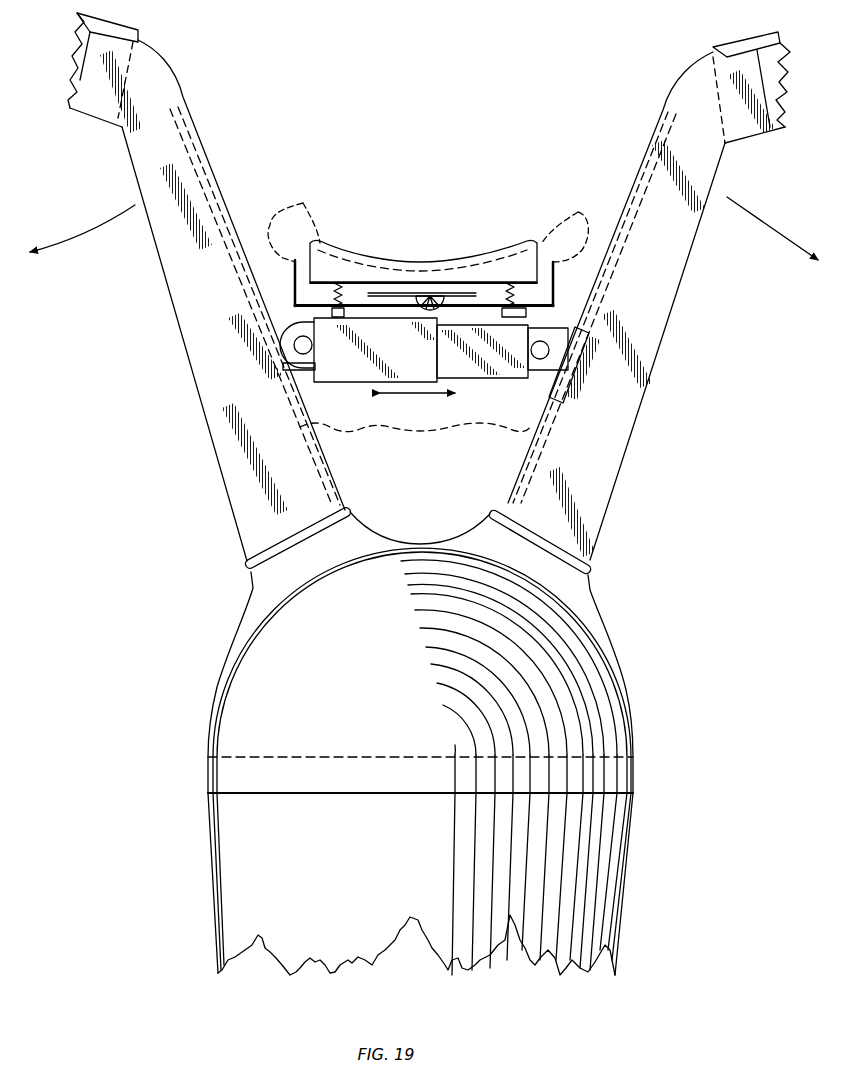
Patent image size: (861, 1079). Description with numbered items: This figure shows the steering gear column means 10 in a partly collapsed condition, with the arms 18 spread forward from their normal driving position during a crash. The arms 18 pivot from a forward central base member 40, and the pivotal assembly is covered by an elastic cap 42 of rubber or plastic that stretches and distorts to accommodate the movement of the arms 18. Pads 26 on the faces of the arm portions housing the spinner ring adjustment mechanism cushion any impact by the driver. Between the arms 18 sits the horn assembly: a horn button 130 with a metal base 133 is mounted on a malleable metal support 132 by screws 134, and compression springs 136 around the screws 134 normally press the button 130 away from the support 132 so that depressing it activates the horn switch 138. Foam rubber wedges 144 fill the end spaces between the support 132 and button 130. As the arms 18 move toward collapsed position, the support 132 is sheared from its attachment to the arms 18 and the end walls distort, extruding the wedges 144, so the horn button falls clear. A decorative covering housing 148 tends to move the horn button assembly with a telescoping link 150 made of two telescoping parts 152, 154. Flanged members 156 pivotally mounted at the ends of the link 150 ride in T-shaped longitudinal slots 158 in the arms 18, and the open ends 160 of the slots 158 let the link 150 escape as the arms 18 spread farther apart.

The steering gear column means 10 is at (620, 156).
The arms 18 is at (200, 301).
The pads 26 is at (112, 27).
The base member 40 is at (388, 840).
The elastic cap 42 is at (420, 690).
The horn button 130 is at (414, 262).
The malleable metal support 132 is at (360, 305).
The metal base 133 is at (490, 283).
The screws 134 is at (310, 313).
The compression springs 136 is at (336, 283).
The horn switch 138 is at (442, 297).
The foam rubber wedges 144 is at (303, 203).
The decorative covering housing 148 is at (505, 414).
The telescoping link 150 is at (357, 383).
The telescoping part 152 is at (360, 346).
The telescoping part 154 is at (475, 350).
The flanged members 156 is at (313, 367).
The T-shaped longitudinal slots 158 is at (208, 155).
The open ends 160 is at (337, 494).